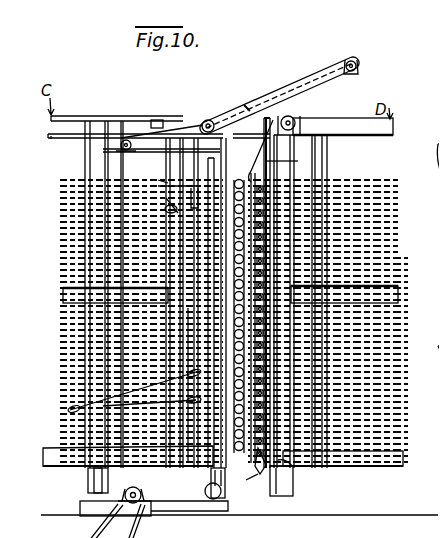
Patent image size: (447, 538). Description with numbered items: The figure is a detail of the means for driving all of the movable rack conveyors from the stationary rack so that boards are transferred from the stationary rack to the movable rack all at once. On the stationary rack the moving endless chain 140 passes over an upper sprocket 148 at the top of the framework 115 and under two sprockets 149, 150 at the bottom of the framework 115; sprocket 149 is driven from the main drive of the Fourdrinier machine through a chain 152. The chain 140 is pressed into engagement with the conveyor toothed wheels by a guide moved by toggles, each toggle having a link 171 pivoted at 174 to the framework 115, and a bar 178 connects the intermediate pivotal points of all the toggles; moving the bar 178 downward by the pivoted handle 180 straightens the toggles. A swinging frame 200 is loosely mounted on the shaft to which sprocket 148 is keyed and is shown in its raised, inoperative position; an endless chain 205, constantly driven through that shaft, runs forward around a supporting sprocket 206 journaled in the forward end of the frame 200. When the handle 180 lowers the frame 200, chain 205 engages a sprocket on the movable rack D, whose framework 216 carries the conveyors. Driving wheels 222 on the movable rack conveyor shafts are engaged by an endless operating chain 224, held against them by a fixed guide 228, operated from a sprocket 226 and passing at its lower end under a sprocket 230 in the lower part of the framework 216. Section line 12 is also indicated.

The section line 12 is at (50, 345).
The framework of the stationary rack 115 is at (72, 128).
The endless chain 140 is at (186, 116).
The upper sprocket 148 is at (258, 124).
The lower sprocket 149 is at (135, 485).
The lower sprocket 150 is at (222, 498).
The drive chain 152 is at (94, 521).
The toggle link 171 is at (200, 172).
The pivot 174 is at (152, 173).
The connecting bar 178 is at (181, 458).
The pivoted handle 180 is at (60, 402).
The swinging frame 200 is at (322, 60).
The endless chain 205 is at (240, 99).
The supporting sprocket 206 is at (352, 63).
The framework of the movable rack 216 is at (338, 130).
The driving wheel 222 is at (246, 470).
The endless operating chain 224 is at (282, 461).
The sprocket 226 is at (283, 109).
The fixed guide 228 is at (290, 156).
The lower sprocket 230 is at (285, 484).